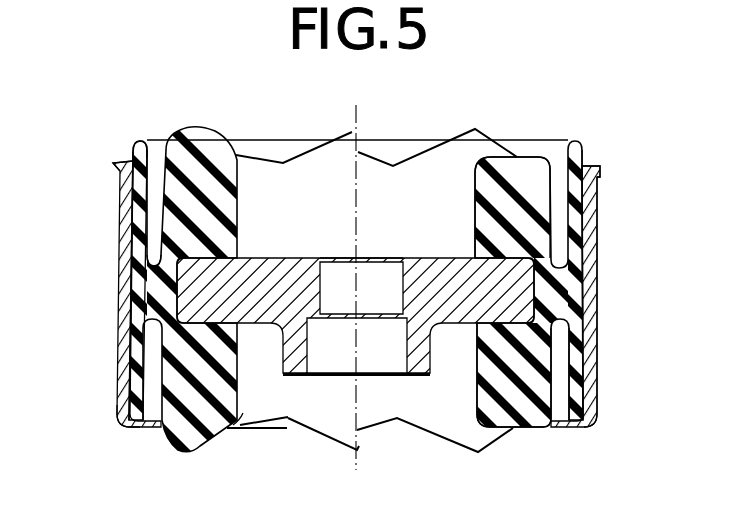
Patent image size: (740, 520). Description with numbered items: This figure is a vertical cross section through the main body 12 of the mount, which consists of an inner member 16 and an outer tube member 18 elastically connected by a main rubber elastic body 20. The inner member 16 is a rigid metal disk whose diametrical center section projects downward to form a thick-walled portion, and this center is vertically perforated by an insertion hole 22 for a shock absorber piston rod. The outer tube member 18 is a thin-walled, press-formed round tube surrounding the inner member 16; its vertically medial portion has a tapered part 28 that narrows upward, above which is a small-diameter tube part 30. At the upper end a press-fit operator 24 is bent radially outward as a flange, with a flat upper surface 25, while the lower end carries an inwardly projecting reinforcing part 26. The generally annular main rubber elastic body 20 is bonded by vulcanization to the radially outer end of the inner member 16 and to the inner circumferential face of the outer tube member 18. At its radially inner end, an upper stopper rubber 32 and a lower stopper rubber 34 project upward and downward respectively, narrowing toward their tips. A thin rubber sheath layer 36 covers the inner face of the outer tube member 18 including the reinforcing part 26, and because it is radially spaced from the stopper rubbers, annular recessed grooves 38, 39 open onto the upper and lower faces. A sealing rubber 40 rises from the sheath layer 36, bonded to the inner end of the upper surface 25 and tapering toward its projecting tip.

The main body 12 is at (359, 265).
The inner member 16 is at (355, 336).
The outer tube member 18 is at (597, 364).
The main rubber elastic body 20 is at (323, 297).
The insertion hole 22 is at (407, 347).
The press-fit operator 24 is at (118, 170).
The upper surface 25 is at (113, 162).
The reinforcing part 26 is at (137, 424).
The tapered part 28 is at (588, 246).
The small-diameter tube part 30 is at (586, 196).
The upper stopper rubber 32 is at (518, 182).
The lower stopper rubber 34 is at (522, 377).
The rubber sheath layer 36 is at (138, 378).
The annular recessed groove 38 is at (142, 260).
The annular recessed groove 39 is at (572, 385).
The sealing rubber 40 is at (140, 152).